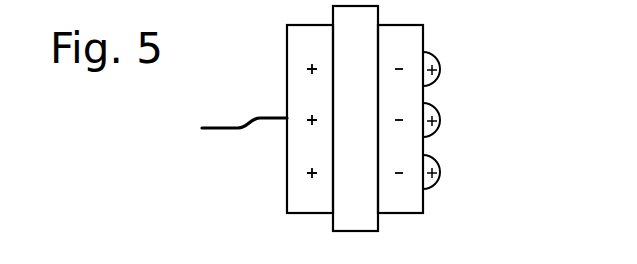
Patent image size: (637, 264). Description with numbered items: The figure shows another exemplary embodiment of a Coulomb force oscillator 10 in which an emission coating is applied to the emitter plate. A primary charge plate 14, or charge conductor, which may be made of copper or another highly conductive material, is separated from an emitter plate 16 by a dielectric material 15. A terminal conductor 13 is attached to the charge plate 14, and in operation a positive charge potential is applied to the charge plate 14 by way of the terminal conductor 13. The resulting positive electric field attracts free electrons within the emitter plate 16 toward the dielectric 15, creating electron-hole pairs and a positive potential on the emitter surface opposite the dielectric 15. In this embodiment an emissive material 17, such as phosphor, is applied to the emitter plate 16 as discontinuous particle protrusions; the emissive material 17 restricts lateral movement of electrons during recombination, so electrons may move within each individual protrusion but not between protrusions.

The Coulomb force oscillator 10 is at (493, 52).
The terminal conductor 13 is at (223, 127).
The primary charge plate 14 is at (287, 164).
The dielectric material 15 is at (333, 230).
The emitter plate 16 is at (423, 38).
The emissive material 17 is at (437, 108).